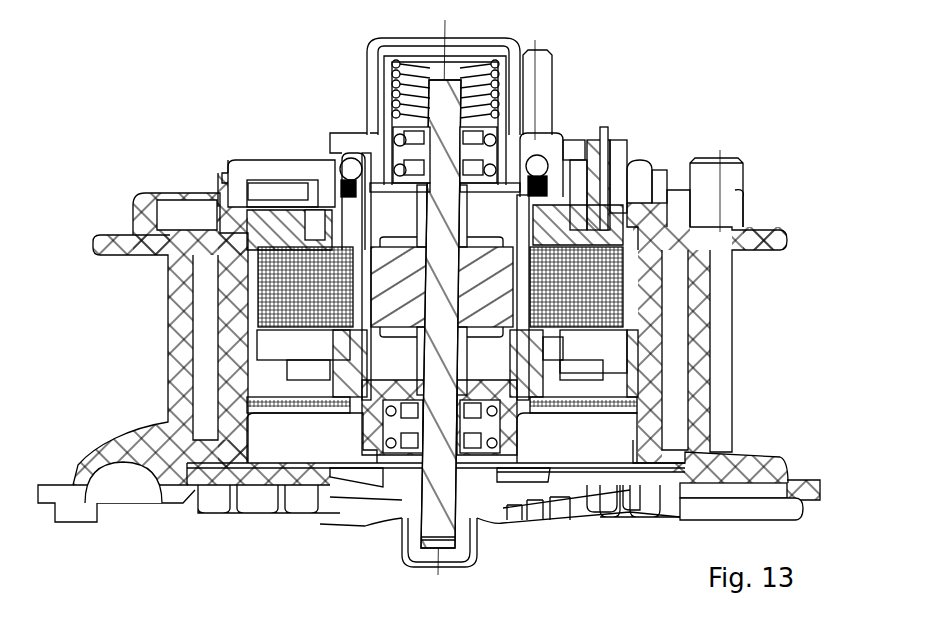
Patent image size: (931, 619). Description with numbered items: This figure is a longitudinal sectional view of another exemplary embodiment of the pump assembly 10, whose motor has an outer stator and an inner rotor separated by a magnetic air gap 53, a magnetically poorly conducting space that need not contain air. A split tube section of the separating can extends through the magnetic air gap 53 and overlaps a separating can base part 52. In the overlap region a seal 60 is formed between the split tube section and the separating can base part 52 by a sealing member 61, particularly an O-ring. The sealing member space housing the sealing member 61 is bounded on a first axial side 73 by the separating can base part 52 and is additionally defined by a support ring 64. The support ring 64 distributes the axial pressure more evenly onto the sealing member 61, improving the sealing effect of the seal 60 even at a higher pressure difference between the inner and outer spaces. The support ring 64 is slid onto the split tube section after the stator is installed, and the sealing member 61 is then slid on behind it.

The pump assembly 10 is at (114, 108).
The separating can base part 52 is at (473, 50).
The magnetic air gap 53 is at (515, 150).
The seal 60 is at (550, 175).
The sealing member 61 is at (330, 160).
The support ring 64 is at (340, 163).
The first axial side 73 is at (347, 153).